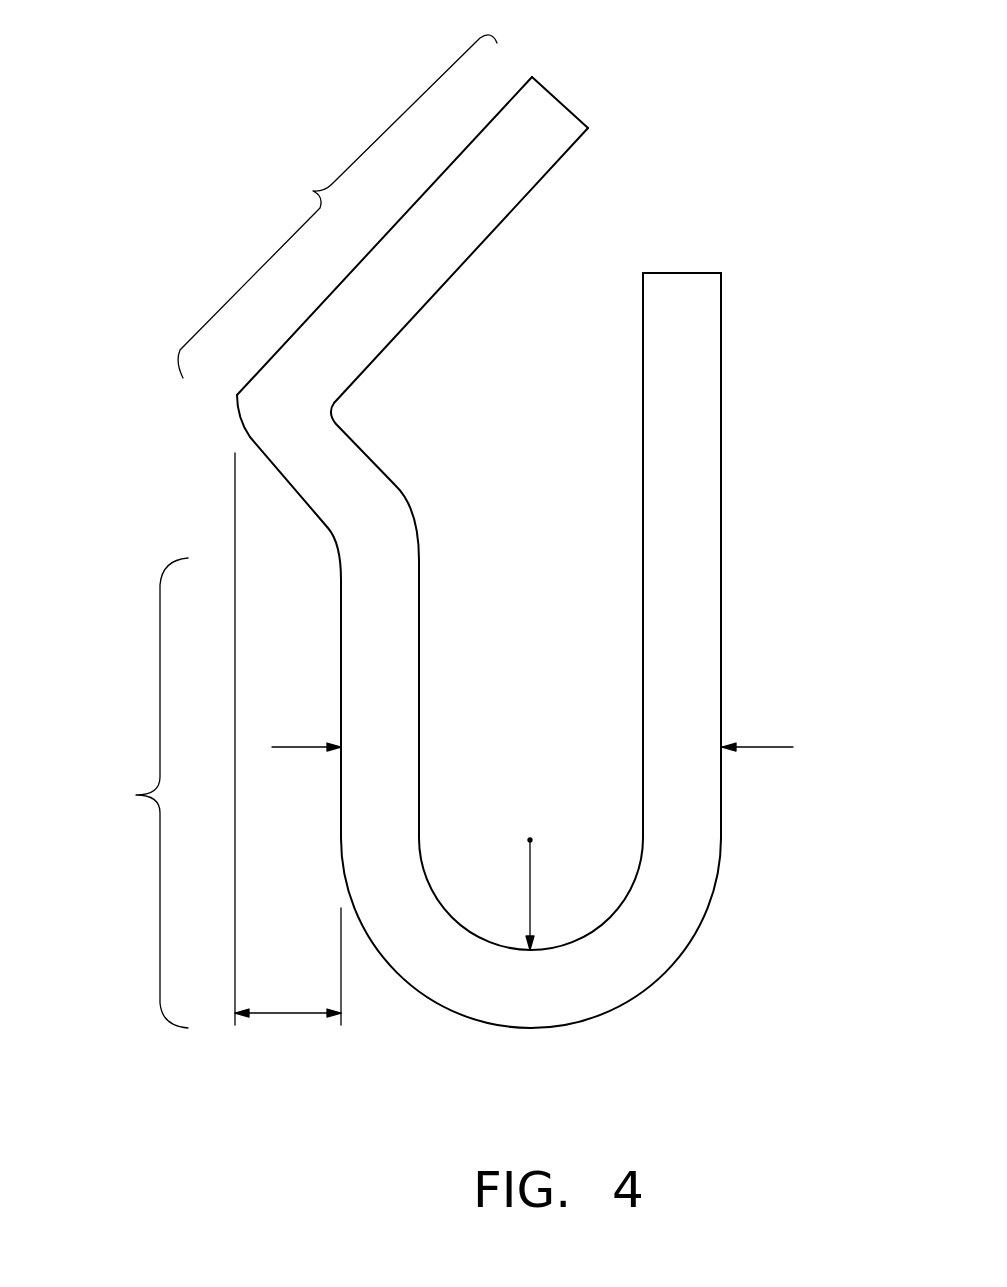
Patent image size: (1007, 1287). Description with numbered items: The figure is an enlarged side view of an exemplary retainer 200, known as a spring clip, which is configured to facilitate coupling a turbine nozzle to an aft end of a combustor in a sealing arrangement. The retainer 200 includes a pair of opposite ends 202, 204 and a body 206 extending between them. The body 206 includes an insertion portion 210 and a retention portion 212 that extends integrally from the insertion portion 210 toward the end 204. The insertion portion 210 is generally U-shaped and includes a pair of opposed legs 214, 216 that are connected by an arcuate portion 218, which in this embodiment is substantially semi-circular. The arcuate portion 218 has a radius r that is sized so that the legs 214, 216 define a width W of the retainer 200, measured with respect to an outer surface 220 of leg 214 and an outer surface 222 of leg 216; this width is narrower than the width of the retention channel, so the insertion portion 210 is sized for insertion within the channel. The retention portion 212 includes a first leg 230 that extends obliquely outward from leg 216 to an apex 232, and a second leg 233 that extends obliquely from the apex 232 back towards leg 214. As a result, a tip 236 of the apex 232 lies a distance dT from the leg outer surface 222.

The retainer 200 is at (298, 95).
The end 202 is at (680, 273).
The end 204 is at (562, 103).
The body 206 is at (588, 973).
The insertion portion 210 is at (136, 795).
The retention portion 212 is at (313, 191).
The leg 214 is at (700, 553).
The leg 216 is at (400, 700).
The arcuate portion 218 is at (475, 997).
The outer surface 220 is at (712, 902).
The outer surface 222 is at (340, 778).
The first leg 230 is at (342, 468).
The apex 232 is at (258, 398).
The second leg 233 is at (417, 253).
The tip 236 is at (234, 410).
The width W is at (767, 748).
The radius r is at (532, 895).
The distance dT is at (287, 1013).